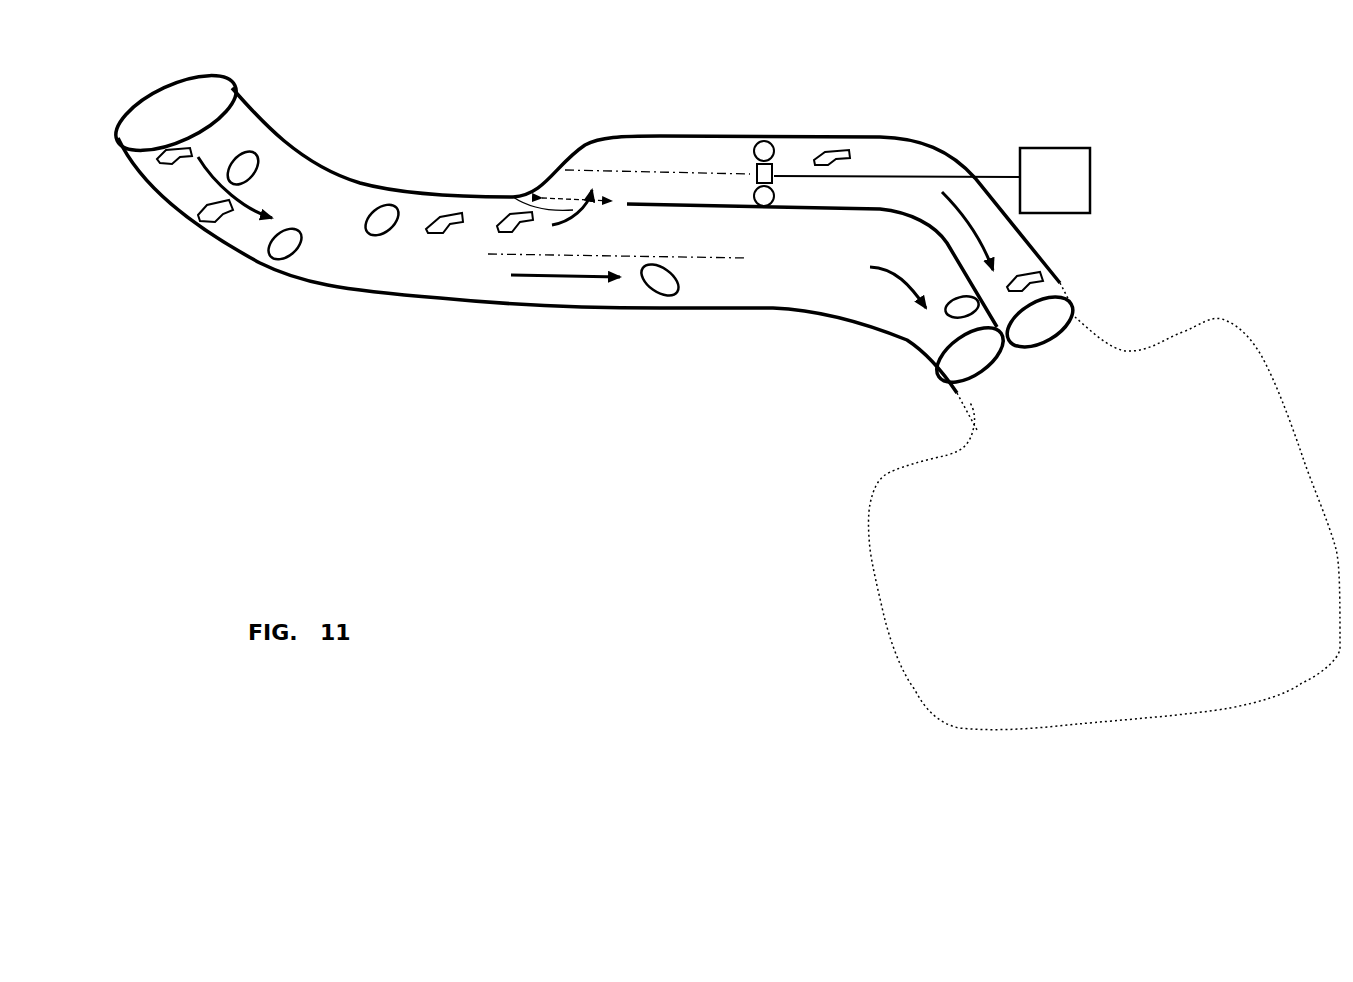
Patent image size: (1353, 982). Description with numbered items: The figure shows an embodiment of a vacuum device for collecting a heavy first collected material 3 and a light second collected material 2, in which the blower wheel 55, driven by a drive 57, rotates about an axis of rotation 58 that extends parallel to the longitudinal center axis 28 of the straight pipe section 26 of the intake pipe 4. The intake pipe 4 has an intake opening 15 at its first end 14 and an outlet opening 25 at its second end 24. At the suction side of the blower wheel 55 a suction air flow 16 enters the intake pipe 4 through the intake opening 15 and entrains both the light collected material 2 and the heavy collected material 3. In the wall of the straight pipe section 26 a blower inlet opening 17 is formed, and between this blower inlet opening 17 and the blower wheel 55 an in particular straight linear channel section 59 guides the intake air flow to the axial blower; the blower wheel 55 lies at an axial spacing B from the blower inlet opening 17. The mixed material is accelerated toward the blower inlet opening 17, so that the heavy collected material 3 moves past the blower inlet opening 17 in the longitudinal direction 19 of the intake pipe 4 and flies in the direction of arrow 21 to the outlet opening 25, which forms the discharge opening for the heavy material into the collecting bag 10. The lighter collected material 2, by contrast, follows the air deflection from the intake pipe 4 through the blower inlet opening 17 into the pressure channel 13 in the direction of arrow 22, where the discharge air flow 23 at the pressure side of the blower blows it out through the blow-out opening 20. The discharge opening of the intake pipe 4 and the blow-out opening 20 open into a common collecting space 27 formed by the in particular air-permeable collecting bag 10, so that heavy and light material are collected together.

The light collected material 2 is at (215, 213).
The heavy collected material 3 is at (277, 250).
The intake pipe 4 is at (333, 265).
The collecting bag 10 is at (920, 545).
The pressure channel 13 is at (1027, 258).
The first end 14 is at (160, 178).
The intake opening 15 is at (140, 123).
The suction air flow 16 is at (212, 182).
The blower inlet opening 17 is at (559, 197).
The longitudinal direction 19 is at (532, 278).
The blow-out opening 20 is at (1057, 315).
The arrow 21 is at (890, 277).
The arrow 22 is at (513, 197).
The discharge air flow 23 is at (993, 248).
The second end 24 is at (917, 333).
The outlet opening 25 is at (949, 373).
The straight pipe section 26 is at (787, 298).
The collecting space 27 is at (1127, 548).
The longitudinal center axis 28 is at (698, 260).
The blower wheel 55 is at (767, 142).
The drive 57 is at (1057, 176).
The axis of rotation 58 is at (903, 176).
The linear channel section 59 is at (654, 138).
The axial spacing B is at (677, 170).